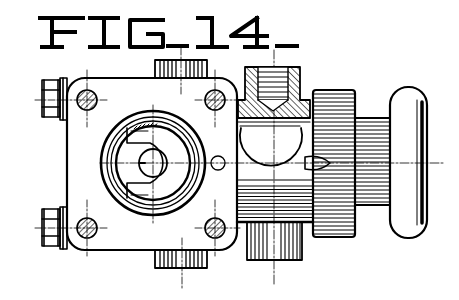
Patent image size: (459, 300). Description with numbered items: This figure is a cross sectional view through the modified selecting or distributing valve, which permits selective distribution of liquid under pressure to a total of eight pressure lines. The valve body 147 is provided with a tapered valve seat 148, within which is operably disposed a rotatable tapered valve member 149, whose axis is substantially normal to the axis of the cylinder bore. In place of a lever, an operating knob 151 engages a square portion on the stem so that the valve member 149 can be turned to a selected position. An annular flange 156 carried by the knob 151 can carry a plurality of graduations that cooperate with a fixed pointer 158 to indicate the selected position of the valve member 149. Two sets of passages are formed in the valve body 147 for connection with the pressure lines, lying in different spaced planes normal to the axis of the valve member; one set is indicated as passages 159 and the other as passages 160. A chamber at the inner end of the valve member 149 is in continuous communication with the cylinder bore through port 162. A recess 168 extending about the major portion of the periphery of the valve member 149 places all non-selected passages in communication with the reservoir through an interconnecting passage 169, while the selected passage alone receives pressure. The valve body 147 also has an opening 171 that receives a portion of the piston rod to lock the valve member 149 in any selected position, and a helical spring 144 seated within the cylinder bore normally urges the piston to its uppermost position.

The helical spring 144 is at (112, 173).
The valve body 147 is at (248, 208).
The tapered valve seat 148 is at (299, 101).
The rotatable tapered valve member 149 is at (306, 130).
The operating knob 151 is at (413, 92).
The annular flange 156 is at (352, 94).
The fixed pointer 158 is at (317, 158).
The passages 159 is at (157, 263).
The passages 160 is at (283, 254).
The port 162 is at (113, 162).
The recess 168 is at (252, 121).
The interconnecting passage 169 is at (218, 170).
The opening 171 is at (123, 165).